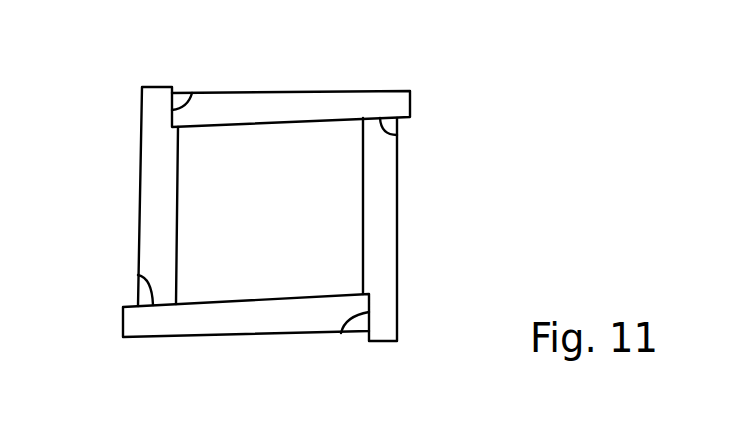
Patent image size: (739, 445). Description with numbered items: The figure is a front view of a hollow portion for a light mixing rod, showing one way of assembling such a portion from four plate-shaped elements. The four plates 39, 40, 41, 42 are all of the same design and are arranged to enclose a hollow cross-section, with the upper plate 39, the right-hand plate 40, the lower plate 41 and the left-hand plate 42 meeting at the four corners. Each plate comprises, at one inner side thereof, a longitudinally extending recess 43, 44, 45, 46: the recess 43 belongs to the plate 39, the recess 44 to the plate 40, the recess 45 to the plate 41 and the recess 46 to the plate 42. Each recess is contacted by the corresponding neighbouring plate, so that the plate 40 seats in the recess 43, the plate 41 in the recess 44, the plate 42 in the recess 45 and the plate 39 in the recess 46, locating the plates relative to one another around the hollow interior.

The plate 39 is at (243, 92).
The plate 40 is at (400, 198).
The plate 41 is at (252, 331).
The plate 42 is at (138, 224).
The longitudinally extending recess 43 is at (397, 135).
The longitudinally extending recess 44 is at (341, 333).
The longitudinally extending recess 45 is at (138, 275).
The longitudinally extending recess 46 is at (192, 93).